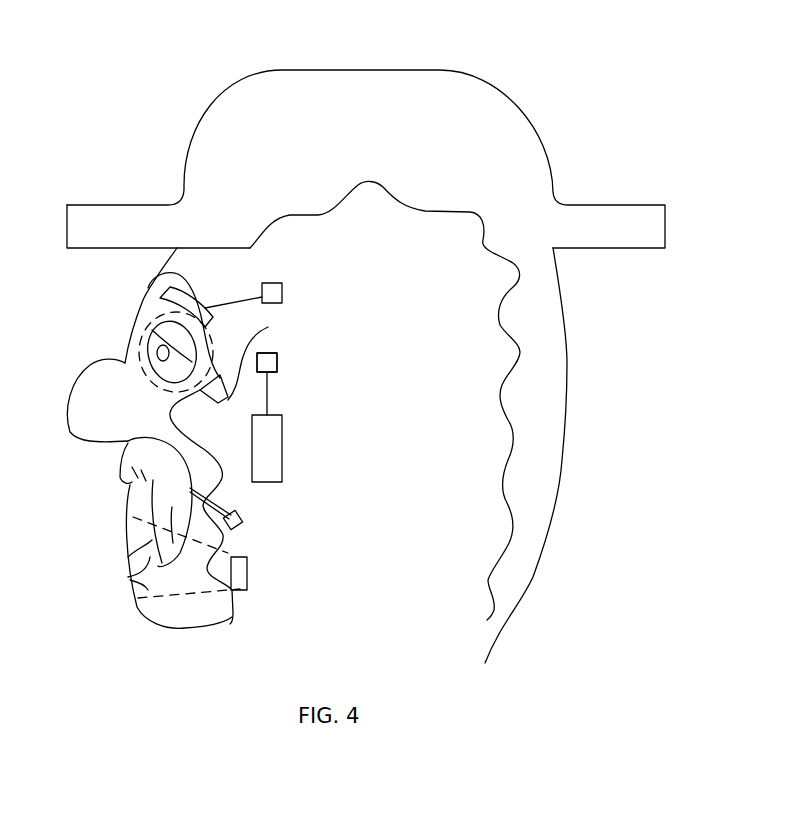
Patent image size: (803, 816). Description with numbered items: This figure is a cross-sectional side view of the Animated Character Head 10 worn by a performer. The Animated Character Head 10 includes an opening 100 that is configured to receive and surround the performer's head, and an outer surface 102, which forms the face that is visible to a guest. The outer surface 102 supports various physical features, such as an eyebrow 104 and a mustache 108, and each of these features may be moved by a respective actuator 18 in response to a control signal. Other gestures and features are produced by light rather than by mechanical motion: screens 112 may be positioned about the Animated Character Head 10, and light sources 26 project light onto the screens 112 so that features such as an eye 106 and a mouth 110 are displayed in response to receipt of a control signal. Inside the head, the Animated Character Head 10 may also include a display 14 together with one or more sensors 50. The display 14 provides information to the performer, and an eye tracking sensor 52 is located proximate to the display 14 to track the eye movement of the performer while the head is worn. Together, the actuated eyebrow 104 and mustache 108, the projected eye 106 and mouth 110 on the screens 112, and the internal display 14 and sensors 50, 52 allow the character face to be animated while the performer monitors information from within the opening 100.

The Animated Character Head 10 is at (545, 51).
The display 14 is at (282, 443).
The actuator 18 is at (270, 283).
The light source 26 is at (280, 581).
The sensor 50 is at (277, 365).
The eye tracking sensor 52 is at (267, 362).
The opening 100 is at (424, 462).
The outer surface 102 is at (111, 314).
The eyebrow 104 is at (158, 272).
The eye 106 is at (157, 388).
The mustache 108 is at (120, 477).
The mouth 110 is at (132, 597).
The screen 112 is at (140, 352).